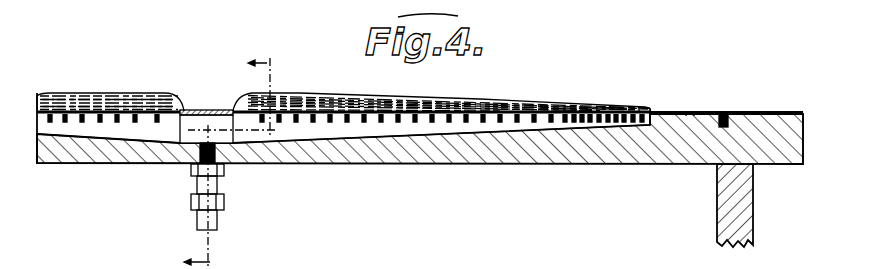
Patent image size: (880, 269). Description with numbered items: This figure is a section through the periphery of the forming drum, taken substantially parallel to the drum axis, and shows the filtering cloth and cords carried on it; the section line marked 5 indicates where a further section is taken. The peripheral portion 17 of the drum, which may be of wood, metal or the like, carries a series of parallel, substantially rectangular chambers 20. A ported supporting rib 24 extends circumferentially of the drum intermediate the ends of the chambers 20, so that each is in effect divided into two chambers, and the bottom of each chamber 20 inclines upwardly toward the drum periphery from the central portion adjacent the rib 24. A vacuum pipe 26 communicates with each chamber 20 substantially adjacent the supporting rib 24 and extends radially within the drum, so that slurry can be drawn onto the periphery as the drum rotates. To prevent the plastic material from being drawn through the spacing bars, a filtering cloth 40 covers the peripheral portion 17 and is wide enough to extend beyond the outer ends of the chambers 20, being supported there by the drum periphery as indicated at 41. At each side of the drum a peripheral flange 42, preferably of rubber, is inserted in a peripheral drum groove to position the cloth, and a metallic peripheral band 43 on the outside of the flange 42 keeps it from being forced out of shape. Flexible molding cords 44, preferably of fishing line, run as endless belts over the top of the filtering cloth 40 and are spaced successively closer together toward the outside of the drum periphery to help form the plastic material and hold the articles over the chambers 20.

The peripheral portion 17 is at (578, 153).
The chamber 20 is at (320, 128).
The ported supporting rib 24 is at (211, 110).
The vacuum pipe 26 is at (212, 186).
The filtering cloth 40 is at (668, 112).
The cloth support on drum periphery 41 is at (697, 114).
The peripheral flange 42 is at (728, 113).
The metallic peripheral band 43 is at (740, 112).
The flexible molding cords 44 is at (157, 108).
The section line 5- 5 is at (237, 163).